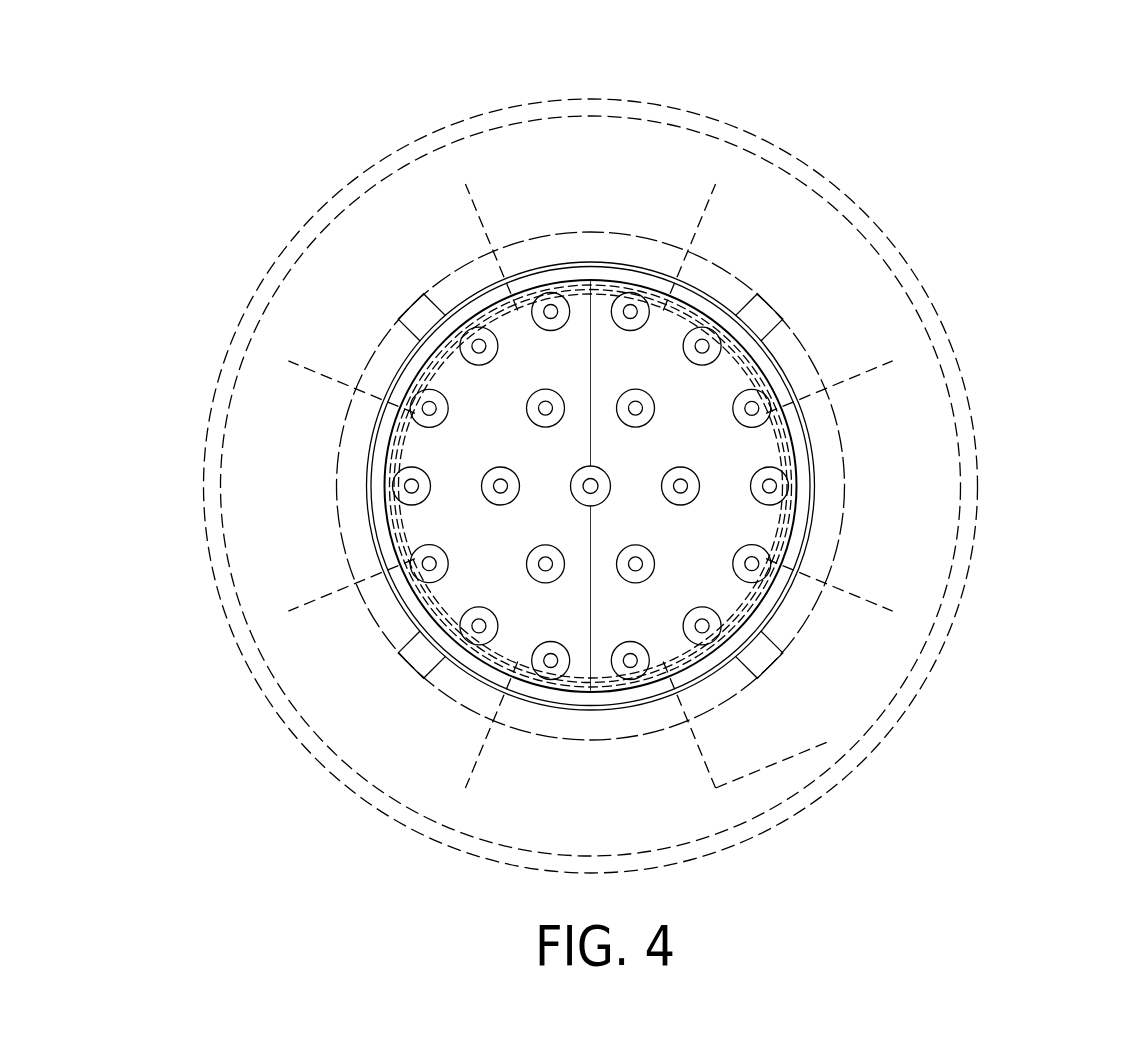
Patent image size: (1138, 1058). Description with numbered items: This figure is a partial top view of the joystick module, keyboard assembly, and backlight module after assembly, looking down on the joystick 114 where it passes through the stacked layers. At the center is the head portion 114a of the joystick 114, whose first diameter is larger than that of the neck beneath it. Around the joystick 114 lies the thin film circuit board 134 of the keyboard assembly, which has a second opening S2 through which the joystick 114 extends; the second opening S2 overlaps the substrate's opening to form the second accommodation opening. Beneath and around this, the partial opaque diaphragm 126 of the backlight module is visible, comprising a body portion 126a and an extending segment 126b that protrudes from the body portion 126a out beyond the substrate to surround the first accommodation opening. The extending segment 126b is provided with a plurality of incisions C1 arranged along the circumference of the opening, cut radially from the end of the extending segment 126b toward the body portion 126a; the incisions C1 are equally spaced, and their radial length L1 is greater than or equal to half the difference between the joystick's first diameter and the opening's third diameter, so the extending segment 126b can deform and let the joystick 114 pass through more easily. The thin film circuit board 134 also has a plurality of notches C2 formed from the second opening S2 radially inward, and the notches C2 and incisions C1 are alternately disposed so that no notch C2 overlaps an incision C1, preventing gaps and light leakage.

The joystick 114 is at (660, 406).
The head portion 114a is at (678, 328).
The second opening S2 is at (620, 263).
The notches C2 is at (763, 324).
The thin film circuit board 134 is at (680, 374).
The partial opaque diaphragm 126 is at (669, 486).
The body portion 126a is at (935, 461).
The extending segment 126b is at (810, 421).
The incisions C1 is at (853, 588).
The length of the incisions L1 is at (763, 618).